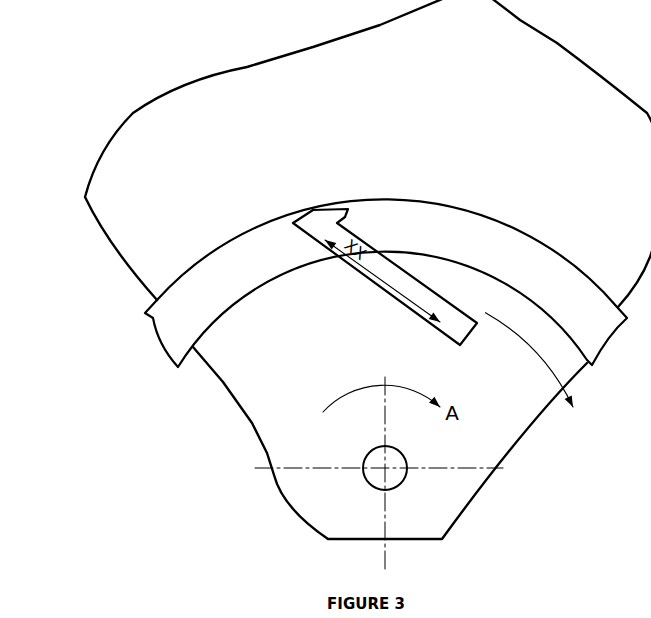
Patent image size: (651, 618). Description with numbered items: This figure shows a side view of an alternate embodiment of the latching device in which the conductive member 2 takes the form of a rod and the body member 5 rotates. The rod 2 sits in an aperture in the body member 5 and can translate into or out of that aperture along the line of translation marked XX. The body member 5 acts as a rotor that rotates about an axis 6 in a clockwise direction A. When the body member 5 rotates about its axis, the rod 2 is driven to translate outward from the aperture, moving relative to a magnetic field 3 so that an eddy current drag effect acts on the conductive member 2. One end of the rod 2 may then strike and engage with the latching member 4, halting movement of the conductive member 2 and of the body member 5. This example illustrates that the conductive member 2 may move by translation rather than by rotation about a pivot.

The conductive member 2 is at (310, 235).
The magnetic field 3 is at (386, 283).
The latching member 4 is at (368, 153).
The body member 5 is at (270, 422).
The axis 6 is at (396, 473).